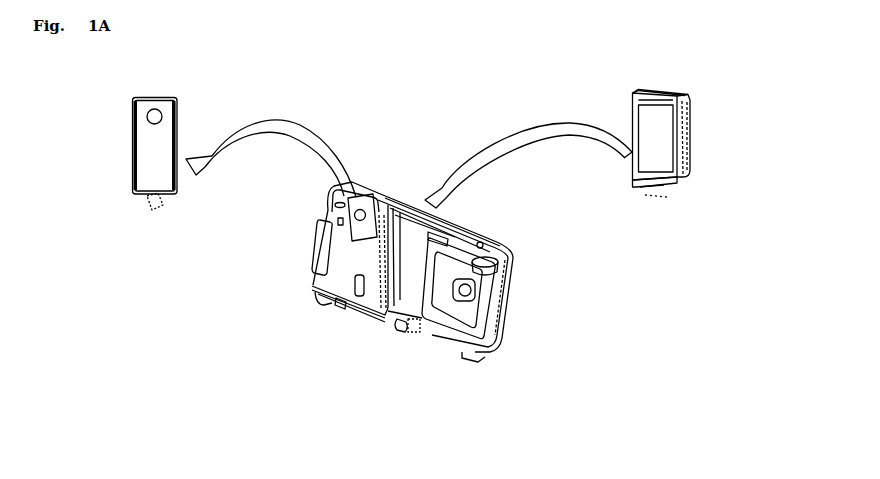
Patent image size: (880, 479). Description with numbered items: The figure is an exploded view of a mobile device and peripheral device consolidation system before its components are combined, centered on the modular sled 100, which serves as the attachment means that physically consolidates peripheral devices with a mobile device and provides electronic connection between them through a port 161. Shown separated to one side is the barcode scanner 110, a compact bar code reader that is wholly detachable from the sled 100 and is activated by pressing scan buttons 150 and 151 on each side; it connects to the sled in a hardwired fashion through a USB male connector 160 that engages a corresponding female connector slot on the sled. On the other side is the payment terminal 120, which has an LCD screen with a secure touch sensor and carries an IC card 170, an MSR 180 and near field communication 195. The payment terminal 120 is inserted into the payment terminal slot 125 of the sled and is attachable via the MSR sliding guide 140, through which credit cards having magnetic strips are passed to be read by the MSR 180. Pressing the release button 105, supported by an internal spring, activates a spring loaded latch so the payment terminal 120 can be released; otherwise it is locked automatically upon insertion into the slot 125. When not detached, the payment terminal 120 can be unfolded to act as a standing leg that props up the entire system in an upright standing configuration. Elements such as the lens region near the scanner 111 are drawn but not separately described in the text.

The modular sled 100 is at (473, 364).
The release button 105 is at (403, 330).
The barcode scanner 110 is at (371, 198).
The camera lens 111 is at (146, 117).
The payment terminal 120 is at (705, 167).
The payment terminal slot 125 is at (423, 241).
The MSR sliding guide 140 is at (323, 286).
The scan button 150 is at (329, 208).
The scan button 151 is at (484, 262).
The USB male connector 160 is at (129, 200).
The port 161 is at (382, 325).
The IC card 170 is at (667, 95).
The MSR 180 is at (677, 182).
The near field communication (NFC) 195 is at (667, 105).